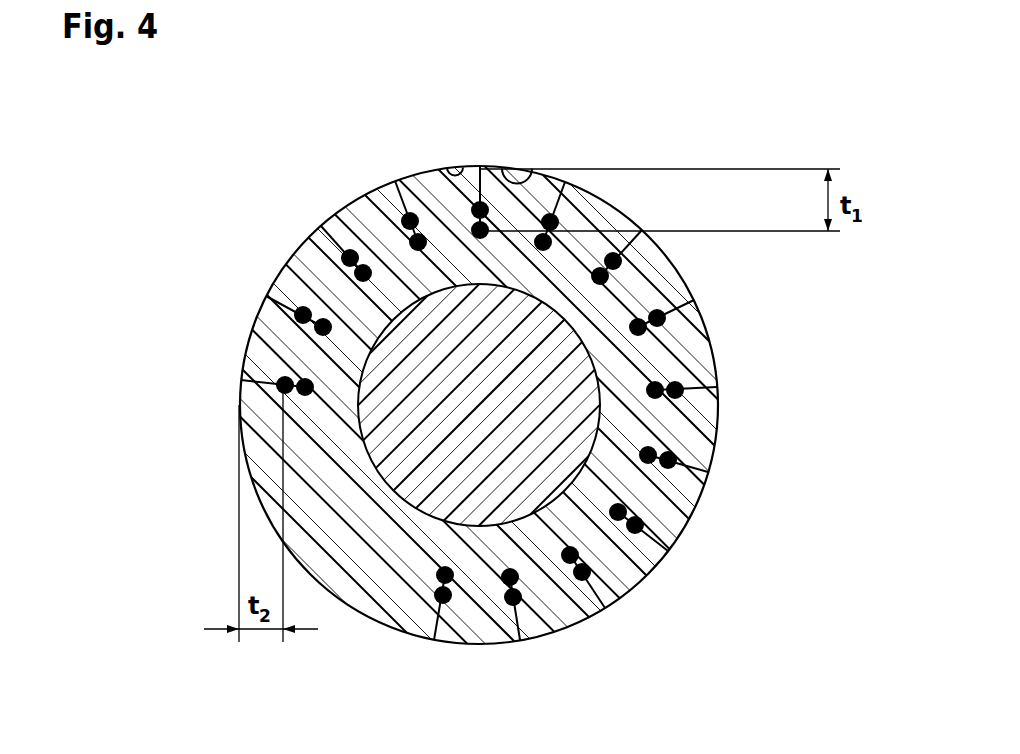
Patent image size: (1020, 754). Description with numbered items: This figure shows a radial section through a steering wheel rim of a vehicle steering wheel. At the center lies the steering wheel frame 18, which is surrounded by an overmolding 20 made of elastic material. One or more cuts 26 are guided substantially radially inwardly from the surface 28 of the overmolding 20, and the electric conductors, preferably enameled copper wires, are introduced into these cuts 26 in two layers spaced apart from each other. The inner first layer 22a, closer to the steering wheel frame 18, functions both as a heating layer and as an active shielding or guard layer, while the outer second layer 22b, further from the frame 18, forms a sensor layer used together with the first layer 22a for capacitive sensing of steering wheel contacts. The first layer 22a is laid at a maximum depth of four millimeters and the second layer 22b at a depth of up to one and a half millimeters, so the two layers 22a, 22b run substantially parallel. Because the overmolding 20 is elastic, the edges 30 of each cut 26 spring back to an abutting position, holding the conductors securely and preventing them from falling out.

The steering wheel frame 18 is at (577, 422).
The overmolding 20 is at (690, 371).
The first layer 22a is at (408, 181).
The second layer 22b is at (427, 177).
The cut 26 is at (527, 170).
The surface 28 is at (262, 310).
The edges 30 is at (447, 168).